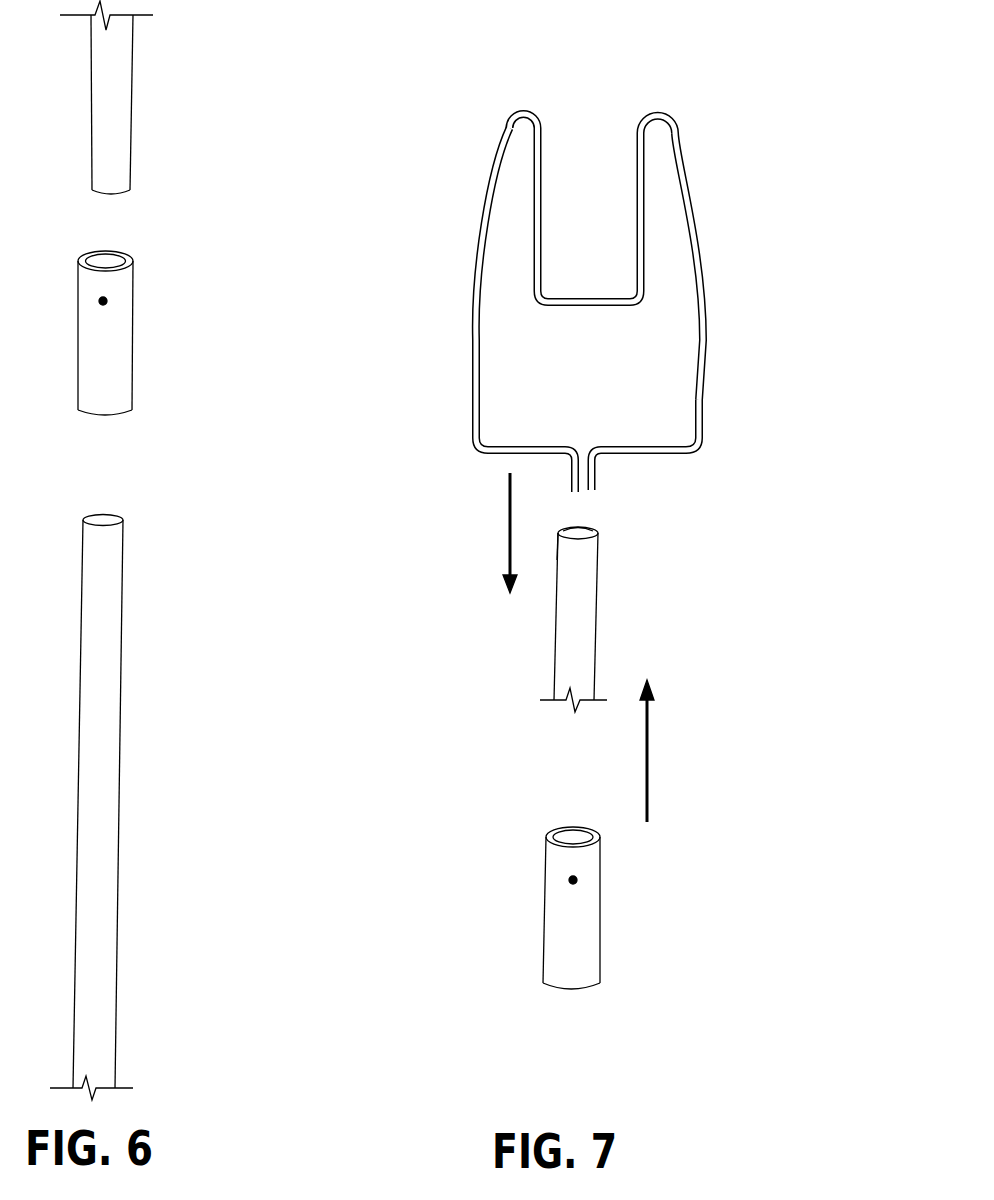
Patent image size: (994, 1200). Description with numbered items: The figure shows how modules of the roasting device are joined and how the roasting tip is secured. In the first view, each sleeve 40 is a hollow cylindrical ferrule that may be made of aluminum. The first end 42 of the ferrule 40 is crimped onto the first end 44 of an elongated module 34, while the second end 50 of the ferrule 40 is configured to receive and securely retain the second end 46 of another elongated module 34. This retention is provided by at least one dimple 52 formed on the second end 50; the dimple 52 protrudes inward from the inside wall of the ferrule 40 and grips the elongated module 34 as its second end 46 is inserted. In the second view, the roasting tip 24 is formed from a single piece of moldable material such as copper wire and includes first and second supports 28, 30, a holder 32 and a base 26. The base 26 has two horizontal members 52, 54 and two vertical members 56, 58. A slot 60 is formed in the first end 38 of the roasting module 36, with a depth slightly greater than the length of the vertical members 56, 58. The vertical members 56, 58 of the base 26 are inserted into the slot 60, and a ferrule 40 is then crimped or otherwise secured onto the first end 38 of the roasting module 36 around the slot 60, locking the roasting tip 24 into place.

In FIG. 7, the roasting tip 24 is at (400, 252).
In FIG. 7, the base 26 is at (868, 468).
In FIG. 7, the first support 28 is at (470, 373).
In FIG. 7, the second support 30 is at (705, 302).
In FIG. 7, the holder 32 is at (587, 297).
In FIG. 6, the elongated module 34 is at (133, 118).
In FIG. 7, the roasting module 36 is at (597, 652).
In FIG. 7, the first end of roasting module 38 is at (575, 528).
In FIG. 6, the sleeve 40 is at (150, 240).
In FIG. 7, the sleeve 40 is at (545, 907).
In FIG. 6, the first end of ferrule 42 is at (72, 382).
In FIG. 6, the first end of elongated module 44 is at (102, 512).
In FIG. 6, the second end of elongated module 46 is at (100, 193).
In FIG. 6, the second end of ferrule 50 is at (133, 310).
In FIG. 6, the dimple 52 is at (100, 302).
In FIG. 7, the dimple 52 is at (540, 456).
In FIG. 7, the horizontal member 54 is at (640, 460).
In FIG. 7, the vertical member 56 is at (570, 478).
In FIG. 7, the vertical member 58 is at (594, 484).
In FIG. 7, the slot 60 is at (557, 551).